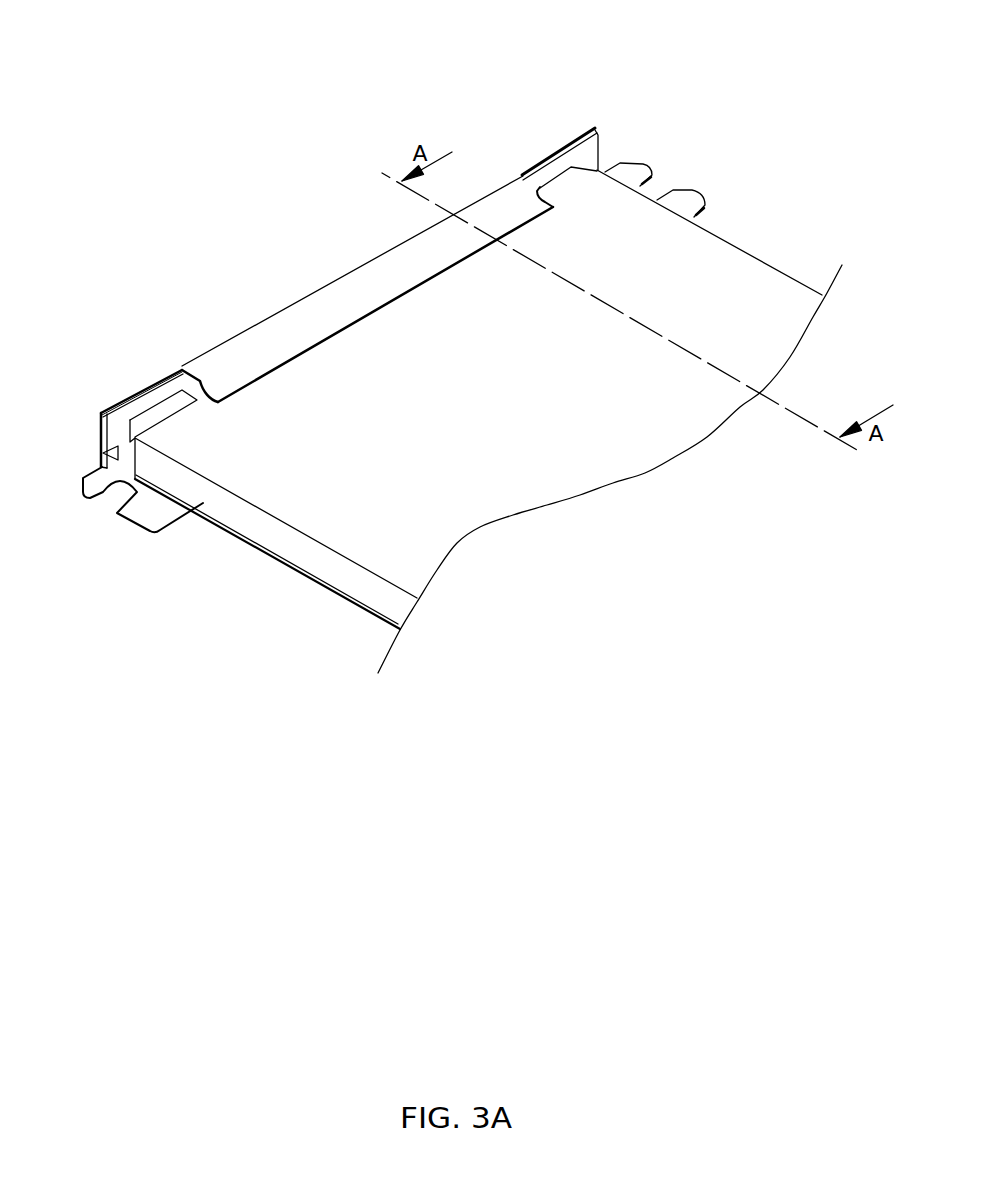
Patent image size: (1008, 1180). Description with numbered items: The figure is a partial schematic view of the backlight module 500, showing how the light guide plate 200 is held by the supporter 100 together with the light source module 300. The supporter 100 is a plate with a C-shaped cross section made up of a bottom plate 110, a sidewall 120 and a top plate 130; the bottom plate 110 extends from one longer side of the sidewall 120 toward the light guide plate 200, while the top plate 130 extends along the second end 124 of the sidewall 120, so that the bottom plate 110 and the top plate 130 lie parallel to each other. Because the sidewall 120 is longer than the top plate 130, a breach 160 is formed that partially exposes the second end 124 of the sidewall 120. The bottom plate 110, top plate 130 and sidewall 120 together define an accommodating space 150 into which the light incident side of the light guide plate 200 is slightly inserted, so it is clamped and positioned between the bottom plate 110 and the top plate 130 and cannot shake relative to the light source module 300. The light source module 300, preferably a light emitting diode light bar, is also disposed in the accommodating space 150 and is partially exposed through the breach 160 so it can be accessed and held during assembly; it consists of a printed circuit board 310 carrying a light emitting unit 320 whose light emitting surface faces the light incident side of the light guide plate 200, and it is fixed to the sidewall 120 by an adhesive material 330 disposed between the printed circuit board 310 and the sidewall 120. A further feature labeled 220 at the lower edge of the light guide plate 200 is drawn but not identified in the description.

The supporter 100 is at (333, 249).
The bottom plate 110 is at (155, 518).
The sidewall 120 is at (311, 267).
The second end 124 is at (123, 398).
The top plate 130 is at (270, 333).
The accommodating space 150 is at (102, 454).
The breach 160 is at (165, 394).
The light guide plate 200 is at (486, 418).
The bottom layer 220 is at (250, 543).
The light source module 300 is at (599, 101).
The printed circuit board 310 is at (590, 155).
The light emitting unit 320 is at (567, 178).
The adhesive material 330 is at (143, 389).
The backlight module 500 is at (171, 121).